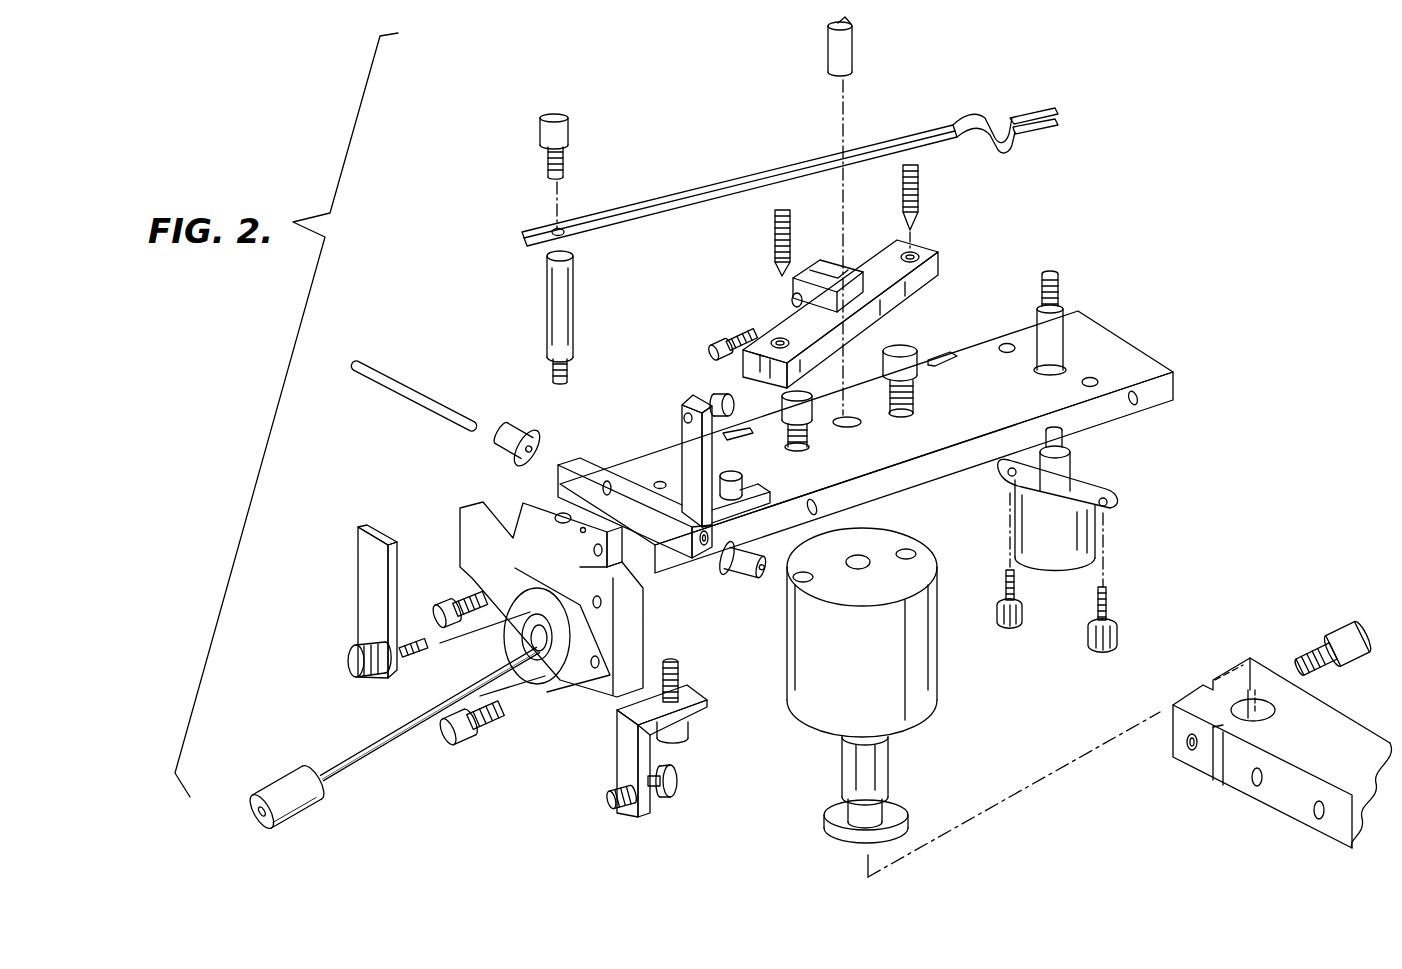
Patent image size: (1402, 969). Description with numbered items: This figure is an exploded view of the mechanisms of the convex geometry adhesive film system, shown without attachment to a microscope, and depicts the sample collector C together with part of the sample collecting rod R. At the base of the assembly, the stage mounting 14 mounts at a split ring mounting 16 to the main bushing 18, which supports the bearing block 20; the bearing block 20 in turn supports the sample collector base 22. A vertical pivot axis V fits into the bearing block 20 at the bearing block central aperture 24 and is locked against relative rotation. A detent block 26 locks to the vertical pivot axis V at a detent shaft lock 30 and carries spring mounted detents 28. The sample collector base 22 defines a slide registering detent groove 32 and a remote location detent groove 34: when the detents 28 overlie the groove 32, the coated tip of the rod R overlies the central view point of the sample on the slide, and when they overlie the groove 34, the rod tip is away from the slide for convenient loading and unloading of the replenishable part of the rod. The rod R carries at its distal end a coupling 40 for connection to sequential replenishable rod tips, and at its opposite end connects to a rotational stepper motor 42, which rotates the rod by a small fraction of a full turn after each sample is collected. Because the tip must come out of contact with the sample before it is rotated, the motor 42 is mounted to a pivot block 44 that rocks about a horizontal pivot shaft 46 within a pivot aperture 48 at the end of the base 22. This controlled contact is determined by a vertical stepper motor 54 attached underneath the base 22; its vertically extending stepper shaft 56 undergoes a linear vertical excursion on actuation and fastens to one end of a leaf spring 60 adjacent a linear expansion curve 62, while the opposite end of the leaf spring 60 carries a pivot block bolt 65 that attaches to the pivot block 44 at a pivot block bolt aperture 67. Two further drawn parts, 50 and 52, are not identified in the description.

The vertical pivot axis V is at (856, 34).
The leaf spring 60 is at (810, 162).
The linear expansion curve 62 is at (985, 120).
The pivot block bolt 65 is at (547, 300).
The spring mounted detents 28 is at (774, 239).
The detent shaft lock 30 is at (840, 272).
The detent block 26 is at (942, 272).
The sample collector base 22 is at (1022, 398).
The remote location detent groove 34 is at (950, 350).
The vertically extending stepper shaft 56 is at (1062, 335).
The sample collector C is at (1196, 268).
The horizontal pivot shaft 46 is at (414, 388).
The pivot aperture 48 is at (637, 513).
The slide registering detent groove 32 is at (733, 442).
The pivot block 44 is at (566, 568).
The pivot block bolt aperture 67 is at (558, 514).
The rotational stepper motor 42 is at (553, 688).
The sample collecting rod R is at (360, 740).
The coupling 40 is at (290, 770).
The plate 50 is at (358, 592).
The L-bracket 52 is at (625, 763).
The bearing block 20 is at (920, 667).
The bearing block central aperture 24 is at (870, 556).
The main bushing 18 is at (890, 773).
The vertical stepper motor 54 is at (1063, 552).
The stage mounting 14 is at (1347, 768).
The split ring mounting 16 is at (1260, 700).